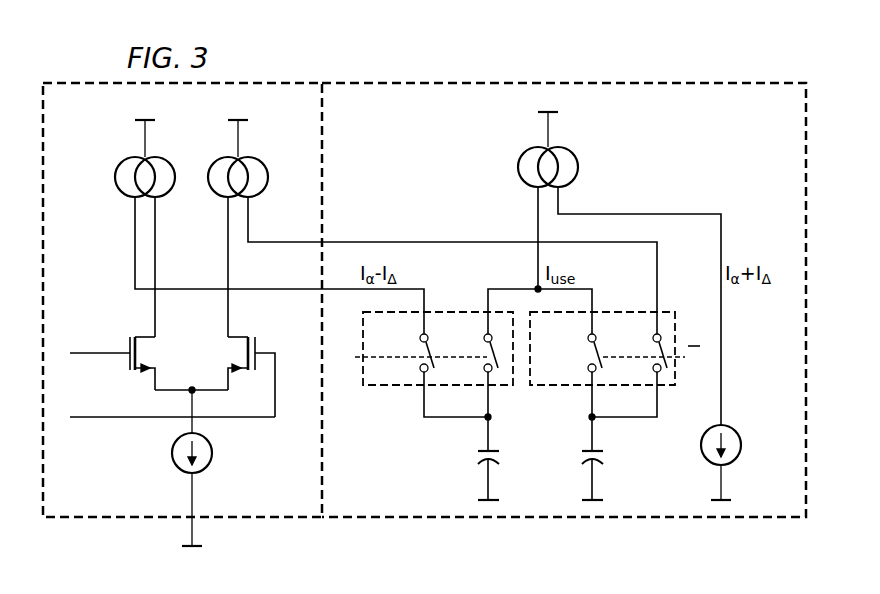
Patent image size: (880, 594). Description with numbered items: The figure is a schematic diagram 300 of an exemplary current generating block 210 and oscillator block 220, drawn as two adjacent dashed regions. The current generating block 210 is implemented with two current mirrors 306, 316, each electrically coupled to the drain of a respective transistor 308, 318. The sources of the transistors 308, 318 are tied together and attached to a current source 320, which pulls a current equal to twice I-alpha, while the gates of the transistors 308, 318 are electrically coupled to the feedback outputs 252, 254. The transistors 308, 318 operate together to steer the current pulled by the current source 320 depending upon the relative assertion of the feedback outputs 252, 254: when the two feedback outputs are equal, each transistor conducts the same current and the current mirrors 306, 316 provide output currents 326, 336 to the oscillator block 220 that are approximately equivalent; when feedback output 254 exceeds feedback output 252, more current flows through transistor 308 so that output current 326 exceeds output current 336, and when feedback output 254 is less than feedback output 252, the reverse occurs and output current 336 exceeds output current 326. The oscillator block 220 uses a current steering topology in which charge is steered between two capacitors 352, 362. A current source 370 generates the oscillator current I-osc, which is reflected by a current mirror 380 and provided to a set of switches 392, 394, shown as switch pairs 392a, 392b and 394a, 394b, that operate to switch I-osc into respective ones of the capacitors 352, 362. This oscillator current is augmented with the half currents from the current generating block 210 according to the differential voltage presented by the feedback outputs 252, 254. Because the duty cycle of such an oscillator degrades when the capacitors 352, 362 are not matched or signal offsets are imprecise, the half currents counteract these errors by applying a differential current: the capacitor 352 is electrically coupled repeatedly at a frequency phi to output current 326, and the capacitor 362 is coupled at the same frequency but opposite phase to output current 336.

The current generating block 210 is at (287, 84).
The schematic diagram 300 is at (531, 63).
The oscillator block 220 is at (729, 178).
The current mirror 306 is at (130, 160).
The current mirror 316 is at (223, 160).
The output current 336 is at (288, 240).
The output current 326 is at (192, 287).
The transistor 308 is at (128, 340).
The transistor 318 is at (258, 340).
The feedback output 254 is at (90, 357).
The feedback output 252 is at (100, 419).
The current source 320 is at (177, 467).
The current mirror 380 is at (562, 153).
The switches 392 is at (424, 321).
The switch 392a is at (418, 350).
The switch 392b is at (482, 350).
The switches 394 is at (616, 321).
The switch 394a is at (586, 350).
The switch 394b is at (651, 350).
The capacitor 352 is at (478, 455).
The capacitor 362 is at (603, 457).
The current source 370 is at (735, 432).